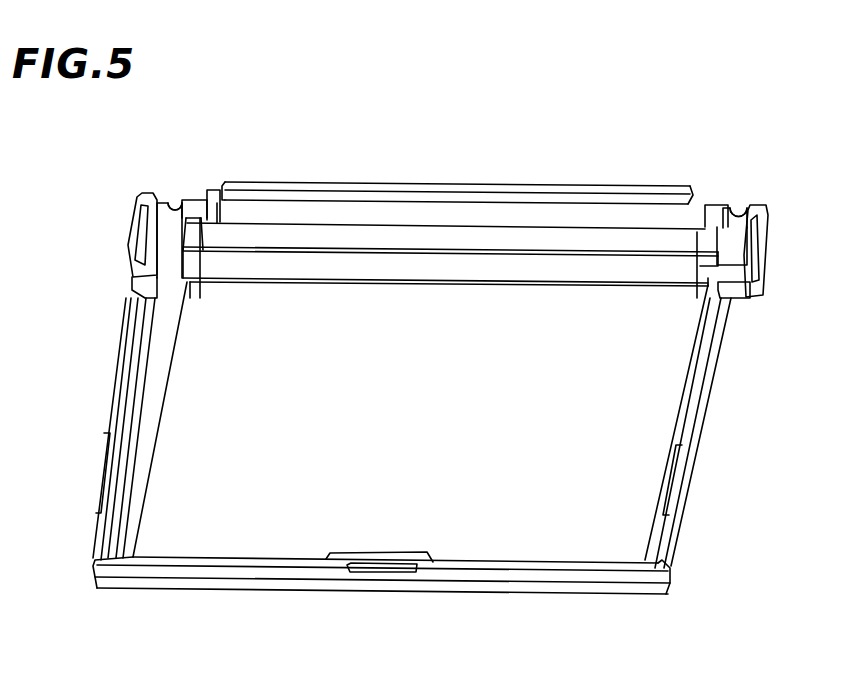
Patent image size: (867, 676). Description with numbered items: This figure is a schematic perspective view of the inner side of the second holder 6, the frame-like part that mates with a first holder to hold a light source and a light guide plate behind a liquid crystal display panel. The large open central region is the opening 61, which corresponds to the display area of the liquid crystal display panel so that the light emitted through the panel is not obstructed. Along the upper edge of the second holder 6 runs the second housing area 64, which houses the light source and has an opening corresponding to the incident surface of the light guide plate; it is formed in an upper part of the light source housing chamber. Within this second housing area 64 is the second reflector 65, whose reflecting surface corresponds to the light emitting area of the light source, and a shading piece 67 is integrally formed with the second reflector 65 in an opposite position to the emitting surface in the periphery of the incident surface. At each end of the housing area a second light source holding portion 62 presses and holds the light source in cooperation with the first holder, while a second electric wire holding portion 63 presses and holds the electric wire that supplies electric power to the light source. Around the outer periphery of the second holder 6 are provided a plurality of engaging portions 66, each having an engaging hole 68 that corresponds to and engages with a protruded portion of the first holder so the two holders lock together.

The second holder 6 is at (228, 590).
The opening 61 is at (600, 402).
The second light source holding portion 62 is at (200, 288).
The second electric wire holding portion 63 is at (177, 203).
The second housing area 64 is at (258, 208).
The second reflector 65 is at (420, 208).
The engaging portion 66 is at (128, 219).
The shading piece 67 is at (413, 286).
The engaging hole 68 is at (383, 572).